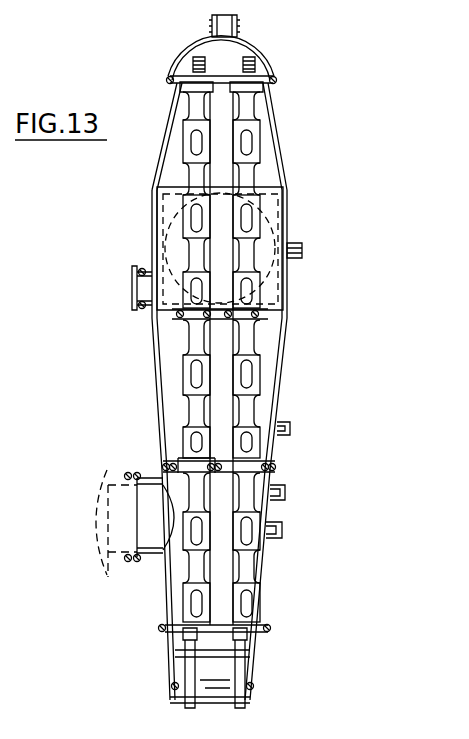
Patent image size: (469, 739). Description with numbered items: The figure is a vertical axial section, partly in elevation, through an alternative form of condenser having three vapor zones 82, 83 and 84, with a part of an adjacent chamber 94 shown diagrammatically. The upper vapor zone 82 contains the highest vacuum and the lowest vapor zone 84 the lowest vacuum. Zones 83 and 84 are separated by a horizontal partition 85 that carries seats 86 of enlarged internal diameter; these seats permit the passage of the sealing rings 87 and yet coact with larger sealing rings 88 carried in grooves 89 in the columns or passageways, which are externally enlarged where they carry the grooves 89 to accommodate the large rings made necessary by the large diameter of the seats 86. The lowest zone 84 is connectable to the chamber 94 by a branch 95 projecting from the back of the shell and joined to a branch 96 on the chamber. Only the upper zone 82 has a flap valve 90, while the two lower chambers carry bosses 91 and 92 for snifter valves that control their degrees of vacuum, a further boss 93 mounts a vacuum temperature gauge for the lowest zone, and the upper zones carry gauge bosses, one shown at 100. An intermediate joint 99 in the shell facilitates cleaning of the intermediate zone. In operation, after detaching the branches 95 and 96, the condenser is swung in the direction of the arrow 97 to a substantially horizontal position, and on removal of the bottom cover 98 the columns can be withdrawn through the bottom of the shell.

The vapor zone 82 is at (265, 133).
The vapor zone 83 is at (268, 363).
The vapor zone 84 is at (268, 545).
The horizontal partition 85 is at (175, 470).
The seats 86 is at (163, 468).
The sealing rings 87 is at (258, 320).
The sealing rings 88 is at (272, 466).
The grooves 89 is at (193, 468).
The flap valve 90 is at (132, 272).
The boss 91 is at (283, 425).
The boss 92 is at (283, 530).
The boss 93 is at (285, 492).
The chamber 94 is at (97, 528).
The branch 95 is at (157, 552).
The branch 96 is at (120, 540).
The arrow 97 is at (333, 480).
The bottom cover 98 is at (215, 627).
The intermediate joint 99 is at (278, 452).
The boss 100 is at (303, 246).